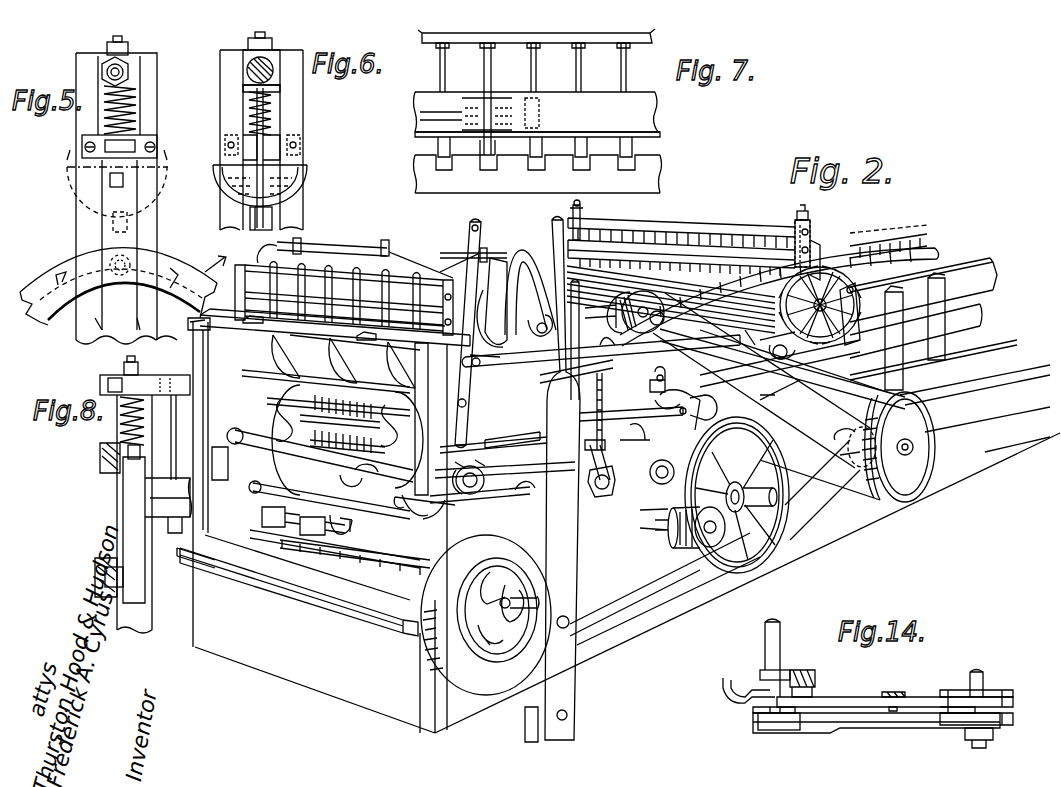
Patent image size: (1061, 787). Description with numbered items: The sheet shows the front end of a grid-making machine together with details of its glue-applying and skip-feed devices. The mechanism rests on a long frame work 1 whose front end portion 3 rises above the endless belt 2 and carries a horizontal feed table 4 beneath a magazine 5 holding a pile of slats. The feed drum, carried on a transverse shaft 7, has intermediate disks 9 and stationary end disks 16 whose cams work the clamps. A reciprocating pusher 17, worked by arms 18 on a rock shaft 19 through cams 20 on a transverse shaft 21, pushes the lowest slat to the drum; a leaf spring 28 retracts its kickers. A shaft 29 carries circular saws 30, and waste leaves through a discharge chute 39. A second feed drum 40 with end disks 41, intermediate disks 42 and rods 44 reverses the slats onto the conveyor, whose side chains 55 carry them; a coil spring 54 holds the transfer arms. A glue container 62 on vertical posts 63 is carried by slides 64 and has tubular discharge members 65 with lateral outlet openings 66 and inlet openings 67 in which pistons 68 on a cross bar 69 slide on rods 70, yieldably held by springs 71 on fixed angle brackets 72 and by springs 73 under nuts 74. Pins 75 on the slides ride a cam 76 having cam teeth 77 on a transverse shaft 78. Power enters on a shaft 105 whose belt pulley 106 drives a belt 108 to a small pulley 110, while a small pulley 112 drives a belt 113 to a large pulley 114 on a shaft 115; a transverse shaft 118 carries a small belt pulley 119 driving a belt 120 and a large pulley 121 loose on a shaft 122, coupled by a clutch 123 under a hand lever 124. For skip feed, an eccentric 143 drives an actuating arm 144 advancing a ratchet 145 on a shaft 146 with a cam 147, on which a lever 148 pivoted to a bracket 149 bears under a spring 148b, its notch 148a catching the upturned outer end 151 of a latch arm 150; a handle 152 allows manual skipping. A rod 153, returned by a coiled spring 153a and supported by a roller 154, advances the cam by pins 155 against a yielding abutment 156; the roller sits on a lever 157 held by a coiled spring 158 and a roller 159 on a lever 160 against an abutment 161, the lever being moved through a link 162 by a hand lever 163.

In FIG. 2, the frame work 1 is at (832, 543).
In FIG. 2, the endless belt 2 is at (903, 250).
In FIG. 2, the front end portion 3 is at (313, 539).
In FIG. 5, the feed table 4 is at (189, 321).
In FIG. 2, the magazine 5 is at (325, 305).
In FIG. 2, the transverse shaft 7 is at (540, 325).
In FIG. 2, the intermediate disks 9 is at (502, 258).
In FIG. 2, the stationary disks 16 is at (488, 323).
In FIG. 2, the reciprocating pusher 17 is at (222, 322).
In FIG. 14, the arms 18 is at (815, 662).
In FIG. 2, the arms 18 is at (268, 388).
In FIG. 2, the transverse rock shaft 19 is at (270, 492).
In FIG. 14, the cams 20 is at (760, 672).
In FIG. 2, the cams 20 is at (312, 450).
In FIG. 14, the transverse shaft 21 is at (765, 635).
In FIG. 2, the transverse shaft 21 is at (290, 482).
In FIG. 2, the leaf spring 28 is at (285, 335).
In FIG. 2, the transverse shaft 29 is at (700, 335).
In FIG. 2, the circular saws 30 is at (548, 250).
In FIG. 2, the discharge chute 39 is at (645, 445).
In FIG. 2, the second feed drum 40 is at (300, 372).
In FIG. 2, the end disks 41 is at (276, 400).
In FIG. 2, the intermediate disks 42 is at (355, 490).
In FIG. 2, the rods 44 is at (342, 390).
In FIG. 2, the coil spring 54 is at (583, 438).
In FIG. 2, the side chains 55 is at (935, 255).
In FIG. 5, the glue container 62 is at (158, 175).
In FIG. 6, the glue container 62 is at (300, 175).
In FIG. 7, the glue container 62 is at (537, 112).
In FIG. 8, the glue container 62 is at (165, 520).
In FIG. 2, the glue container 62 is at (760, 240).
In FIG. 5, the vertical posts 63 is at (148, 125).
In FIG. 6, the vertical posts 63 is at (222, 205).
In FIG. 8, the vertical posts 63 is at (117, 428).
In FIG. 2, the vertical posts 63 is at (585, 208).
In FIG. 5, the slides 64 is at (103, 222).
In FIG. 6, the slides 64 is at (263, 148).
In FIG. 8, the slides 64 is at (123, 487).
In FIG. 2, the slides 64 is at (822, 240).
In FIG. 5, the tubular discharge members 65 is at (113, 220).
In FIG. 7, the tubular discharge members 65 is at (428, 143).
In FIG. 8, the tubular discharge members 65 is at (180, 565).
In FIG. 6, the lateral outlet openings 66 is at (250, 218).
In FIG. 7, the lateral outlet openings 66 is at (480, 165).
In FIG. 6, the inlet openings 67 is at (298, 192).
In FIG. 7, the inlet openings 67 is at (504, 105).
In FIG. 6, the pistons 68 is at (264, 102).
In FIG. 7, the pistons 68 is at (446, 80).
In FIG. 8, the pistons 68 is at (170, 430).
In FIG. 2, the pistons 68 is at (730, 220).
In FIG. 5, the cross bar 69 is at (124, 70).
In FIG. 6, the cross bar 69 is at (250, 72).
In FIG. 7, the cross bar 69 is at (652, 36).
In FIG. 8, the cross bar 69 is at (176, 378).
In FIG. 2, the cross bar 69 is at (690, 207).
In FIG. 5, the rods 70 is at (108, 127).
In FIG. 6, the rods 70 is at (243, 135).
In FIG. 8, the rods 70 is at (140, 452).
In FIG. 5, the springs 71 is at (106, 110).
In FIG. 6, the springs 71 is at (272, 117).
In FIG. 8, the springs 71 is at (145, 413).
In FIG. 5, the fixed angle brackets 72 is at (157, 140).
In FIG. 6, the fixed angle brackets 72 is at (220, 150).
In FIG. 8, the fixed angle brackets 72 is at (100, 448).
In FIG. 6, the springs 73 is at (275, 52).
In FIG. 8, the springs 73 is at (124, 368).
In FIG. 5, the nuts 74 is at (128, 45).
In FIG. 6, the nuts 74 is at (248, 42).
In FIG. 8, the nuts 74 is at (135, 360).
In FIG. 2, the nuts 74 is at (796, 205).
In FIG. 5, the pins 75 is at (130, 262).
In FIG. 8, the pins 75 is at (123, 577).
In FIG. 5, the cam 76 is at (78, 252).
In FIG. 8, the cam 76 is at (110, 557).
In FIG. 2, the cam 76 is at (848, 275).
In FIG. 5, the cam teeth 77 is at (150, 290).
In FIG. 2, the cam teeth 77 is at (570, 210).
In FIG. 2, the transverse shaft 78 is at (878, 296).
In FIG. 2, the shaft 105 is at (916, 447).
In FIG. 2, the belt pulley 106 is at (950, 460).
In FIG. 2, the belt 108 is at (835, 385).
In FIG. 2, the small pulley 110 is at (620, 325).
In FIG. 2, the small pulley 112 is at (855, 430).
In FIG. 2, the belt 113 is at (820, 495).
In FIG. 2, the large pulley 114 is at (790, 485).
In FIG. 2, the shaft 115 is at (780, 530).
In FIG. 2, the transverse shaft 118 is at (660, 540).
In FIG. 2, the small belt pulley 119 is at (654, 542).
In FIG. 2, the belt 120 is at (670, 585).
In FIG. 2, the large pulley 121 is at (478, 676).
In FIG. 2, the shaft 122 is at (610, 582).
In FIG. 2, the clutch 123 is at (500, 635).
In FIG. 2, the hand lever 124 is at (554, 620).
In FIG. 14, the eccentric 143 is at (770, 730).
In FIG. 2, the eccentric 143 is at (475, 495).
In FIG. 14, the actuating arm 144 is at (880, 733).
In FIG. 2, the actuating arm 144 is at (482, 492).
In FIG. 14, the ratchet 145 is at (1005, 725).
In FIG. 2, the ratchet 145 is at (600, 500).
In FIG. 14, the shaft 146 is at (970, 748).
In FIG. 2, the shaft 146 is at (614, 480).
In FIG. 14, the cam 147 is at (1000, 690).
In FIG. 14, the lever 148 is at (935, 690).
In FIG. 2, the lever 148 is at (462, 450).
In FIG. 14, the notch 148a is at (753, 710).
In FIG. 2, the notch 148a is at (428, 520).
In FIG. 2, the spring 148b is at (489, 461).
In FIG. 14, the bracket 149 is at (893, 690).
In FIG. 2, the bracket 149 is at (512, 422).
In FIG. 2, the latch arm 150 is at (430, 530).
In FIG. 14, the upturned outer end 151 is at (710, 688).
In FIG. 2, the upturned outer end 151 is at (400, 510).
In FIG. 2, the handle 152 is at (470, 224).
In FIG. 2, the rod 153 is at (730, 347).
In FIG. 2, the coiled spring 153a is at (766, 328).
In FIG. 2, the roller 154 is at (770, 355).
In FIG. 2, the pins 155 is at (780, 333).
In FIG. 2, the yielding abutment 156 is at (858, 320).
In FIG. 2, the lever 157 is at (792, 390).
In FIG. 2, the coiled spring 158 is at (650, 394).
In FIG. 2, the roller 159 is at (669, 376).
In FIG. 2, the lever 160 is at (689, 442).
In FIG. 2, the abutment 161 is at (705, 440).
In FIG. 2, the link 162 is at (621, 410).
In FIG. 2, the hand lever 163 is at (600, 375).